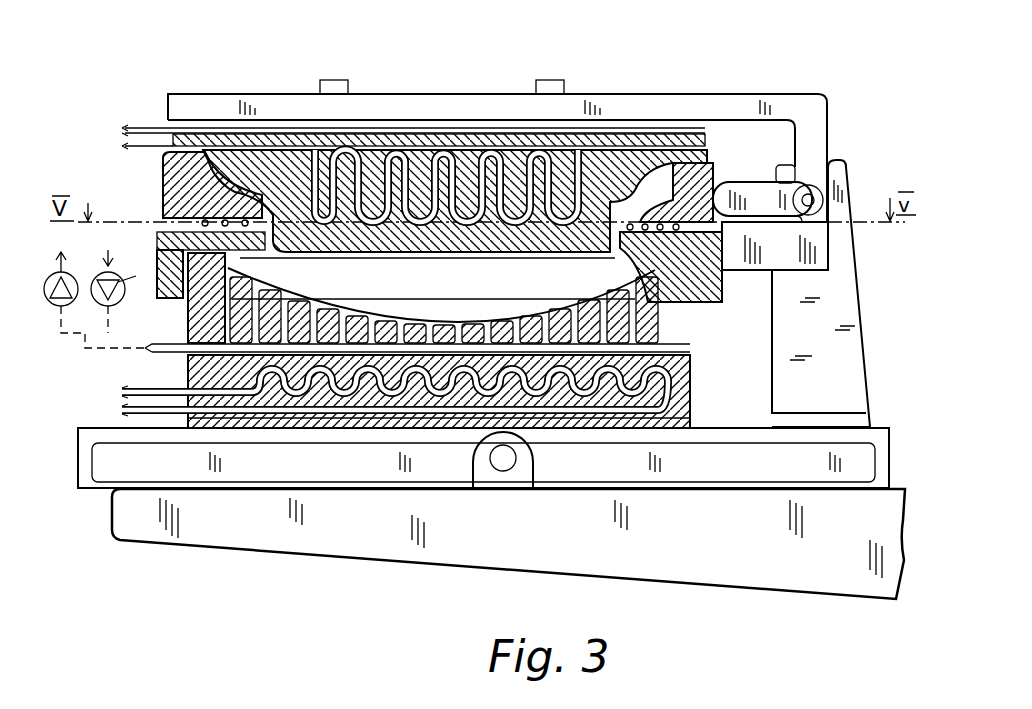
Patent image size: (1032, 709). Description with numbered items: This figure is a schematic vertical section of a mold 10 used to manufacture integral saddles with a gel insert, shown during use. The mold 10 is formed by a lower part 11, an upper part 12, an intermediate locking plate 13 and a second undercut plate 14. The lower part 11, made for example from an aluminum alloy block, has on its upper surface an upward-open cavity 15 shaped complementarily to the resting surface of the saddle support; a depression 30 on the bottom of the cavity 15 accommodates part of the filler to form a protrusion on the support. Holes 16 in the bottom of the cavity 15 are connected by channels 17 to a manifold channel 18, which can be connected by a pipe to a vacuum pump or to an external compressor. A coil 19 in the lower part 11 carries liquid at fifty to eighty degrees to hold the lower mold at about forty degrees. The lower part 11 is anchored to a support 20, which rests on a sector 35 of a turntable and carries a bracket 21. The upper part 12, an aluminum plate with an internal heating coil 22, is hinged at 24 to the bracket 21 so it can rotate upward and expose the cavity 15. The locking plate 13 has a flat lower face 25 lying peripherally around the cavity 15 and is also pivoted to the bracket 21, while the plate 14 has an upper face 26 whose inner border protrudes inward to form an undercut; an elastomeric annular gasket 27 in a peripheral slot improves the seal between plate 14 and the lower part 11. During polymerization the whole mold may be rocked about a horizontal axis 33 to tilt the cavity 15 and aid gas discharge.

The mold 10 is at (762, 22).
The lower part 11 is at (177, 377).
The upper part 12 is at (634, 128).
The intermediate locking plate 13 is at (730, 184).
The second undercut plate 14 is at (738, 294).
The cavity 15 is at (455, 289).
The holes 16 is at (268, 302).
The channels 17 is at (188, 322).
The manifold channel 18 is at (448, 452).
The coil 19 is at (688, 370).
The support 20 is at (883, 428).
The bracket 21 is at (850, 362).
The heating coil 22 is at (297, 150).
The hinge 24 is at (816, 184).
The flat lower face 25 is at (772, 228).
The upper face 26 is at (165, 226).
The annular gasket 27 is at (697, 334).
The depression 30 is at (514, 322).
The horizontal axis 33 is at (503, 464).
The sectors 35 is at (348, 535).